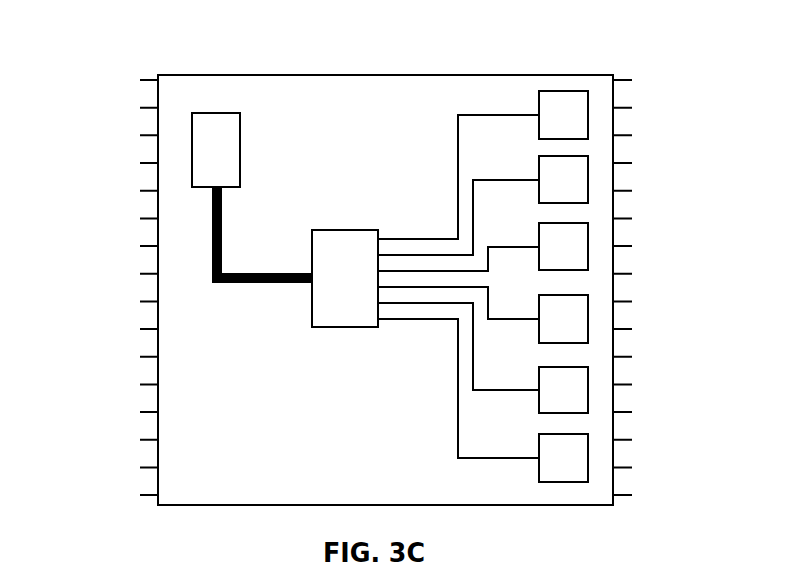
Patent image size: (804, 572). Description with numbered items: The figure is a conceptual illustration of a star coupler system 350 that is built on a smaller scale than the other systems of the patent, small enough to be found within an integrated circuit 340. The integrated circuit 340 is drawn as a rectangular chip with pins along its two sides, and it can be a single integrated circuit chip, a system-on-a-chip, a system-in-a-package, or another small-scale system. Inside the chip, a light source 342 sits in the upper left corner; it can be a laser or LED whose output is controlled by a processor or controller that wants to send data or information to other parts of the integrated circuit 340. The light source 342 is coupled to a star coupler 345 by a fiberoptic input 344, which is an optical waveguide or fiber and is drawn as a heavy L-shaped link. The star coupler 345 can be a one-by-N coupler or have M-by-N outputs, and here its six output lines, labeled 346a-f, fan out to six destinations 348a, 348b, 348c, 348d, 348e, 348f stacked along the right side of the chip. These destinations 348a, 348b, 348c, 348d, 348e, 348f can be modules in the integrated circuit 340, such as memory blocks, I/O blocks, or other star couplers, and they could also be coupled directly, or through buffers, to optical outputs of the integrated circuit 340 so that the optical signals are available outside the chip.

The star coupler system 350 is at (296, 44).
The integrated circuit 340 is at (173, 297).
The light source 342 is at (229, 136).
The fiberoptic input 344 is at (256, 273).
The star coupler 345 is at (333, 312).
The signal lines 346a-f is at (443, 358).
The destination 348a is at (575, 107).
The destination 348b is at (575, 165).
The destination 348c is at (575, 253).
The destination 348d is at (575, 305).
The destination 348e is at (575, 387).
The destination 348f is at (575, 445).